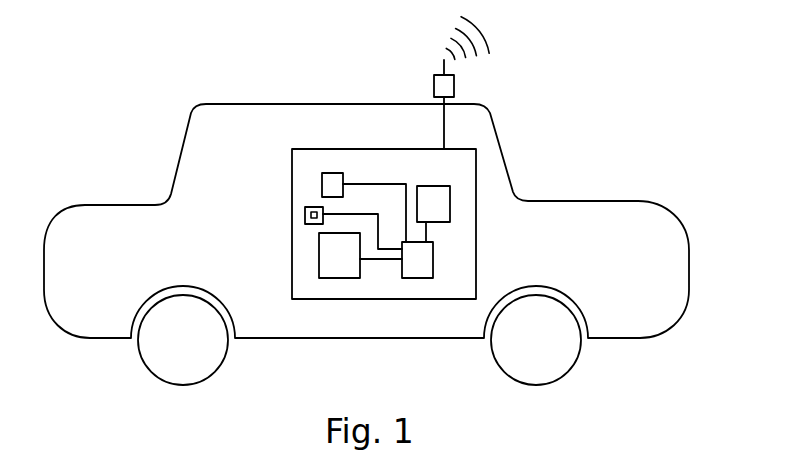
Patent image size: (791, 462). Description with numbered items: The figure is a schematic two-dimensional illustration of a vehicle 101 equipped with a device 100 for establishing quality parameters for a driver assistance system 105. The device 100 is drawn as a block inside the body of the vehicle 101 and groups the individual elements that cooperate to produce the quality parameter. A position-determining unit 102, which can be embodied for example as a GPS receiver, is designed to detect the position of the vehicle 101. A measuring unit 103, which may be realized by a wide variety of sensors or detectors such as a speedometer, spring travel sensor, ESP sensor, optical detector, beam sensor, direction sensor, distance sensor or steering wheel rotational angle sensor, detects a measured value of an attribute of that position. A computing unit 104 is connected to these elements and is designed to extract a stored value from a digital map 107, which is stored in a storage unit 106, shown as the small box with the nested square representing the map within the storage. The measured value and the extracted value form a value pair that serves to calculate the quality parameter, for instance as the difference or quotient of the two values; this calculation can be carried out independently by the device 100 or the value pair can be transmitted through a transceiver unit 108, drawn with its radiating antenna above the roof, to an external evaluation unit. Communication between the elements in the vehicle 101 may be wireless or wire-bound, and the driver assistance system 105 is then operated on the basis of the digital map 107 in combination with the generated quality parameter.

The device 100 is at (432, 299).
The vehicle 101 is at (313, 104).
The position-determining unit 102 is at (443, 186).
The measuring unit 103 is at (340, 278).
The computing unit 104 is at (420, 278).
The driver assistance system 105 is at (332, 173).
The storage unit 106 is at (313, 207).
The digital map 107 is at (305, 215).
The transceiver unit 108 is at (444, 60).